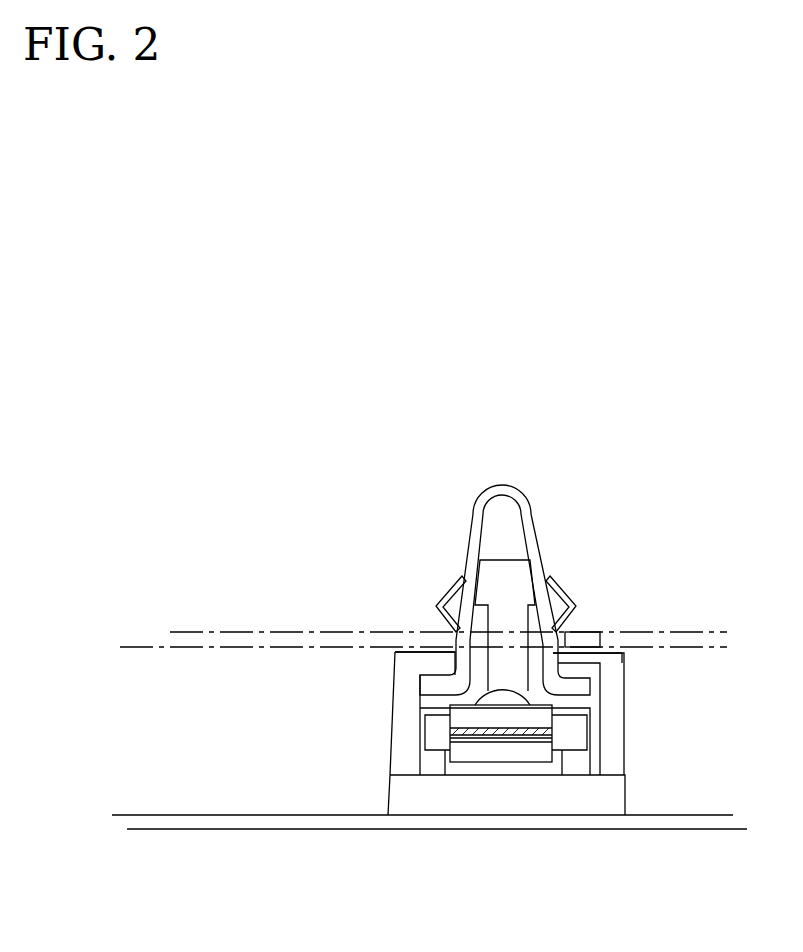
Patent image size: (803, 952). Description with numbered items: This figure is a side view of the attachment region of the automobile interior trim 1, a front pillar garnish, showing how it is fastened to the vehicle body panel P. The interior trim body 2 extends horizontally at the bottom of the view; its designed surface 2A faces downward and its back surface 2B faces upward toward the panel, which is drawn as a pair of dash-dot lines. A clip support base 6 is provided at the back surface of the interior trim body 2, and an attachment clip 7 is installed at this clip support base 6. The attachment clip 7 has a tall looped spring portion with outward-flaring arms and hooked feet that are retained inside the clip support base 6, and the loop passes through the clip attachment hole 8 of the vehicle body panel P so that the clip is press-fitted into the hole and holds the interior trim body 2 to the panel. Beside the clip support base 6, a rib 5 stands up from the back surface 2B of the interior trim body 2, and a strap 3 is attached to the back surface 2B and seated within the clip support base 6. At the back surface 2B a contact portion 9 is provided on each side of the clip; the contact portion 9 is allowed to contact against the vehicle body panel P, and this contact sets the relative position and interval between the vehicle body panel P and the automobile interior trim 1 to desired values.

The automobile interior trim 1 is at (429, 839).
The interior trim body 2 is at (429, 821).
The designed surface 2A is at (252, 830).
The back surface 2B is at (205, 812).
The strap 3 is at (490, 752).
The rib 5 is at (526, 688).
The clip support base 6 is at (473, 660).
The attachment clip 7 is at (505, 570).
The clip attachment hole 8 is at (452, 644).
The contact portion 9 is at (407, 650).
The vehicle body panel P is at (683, 632).